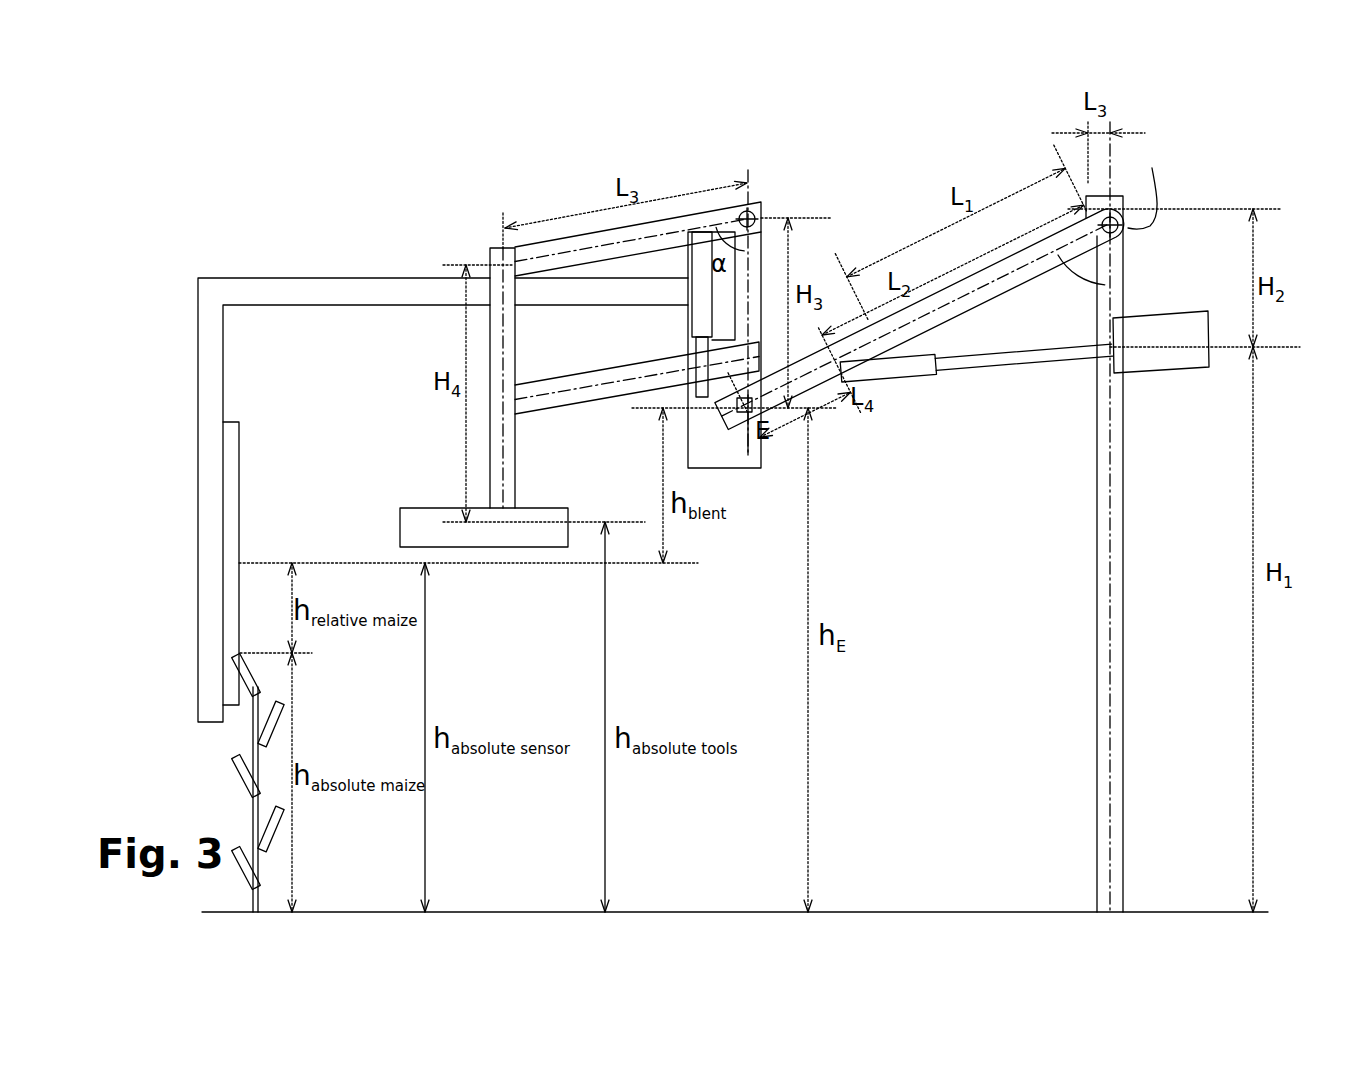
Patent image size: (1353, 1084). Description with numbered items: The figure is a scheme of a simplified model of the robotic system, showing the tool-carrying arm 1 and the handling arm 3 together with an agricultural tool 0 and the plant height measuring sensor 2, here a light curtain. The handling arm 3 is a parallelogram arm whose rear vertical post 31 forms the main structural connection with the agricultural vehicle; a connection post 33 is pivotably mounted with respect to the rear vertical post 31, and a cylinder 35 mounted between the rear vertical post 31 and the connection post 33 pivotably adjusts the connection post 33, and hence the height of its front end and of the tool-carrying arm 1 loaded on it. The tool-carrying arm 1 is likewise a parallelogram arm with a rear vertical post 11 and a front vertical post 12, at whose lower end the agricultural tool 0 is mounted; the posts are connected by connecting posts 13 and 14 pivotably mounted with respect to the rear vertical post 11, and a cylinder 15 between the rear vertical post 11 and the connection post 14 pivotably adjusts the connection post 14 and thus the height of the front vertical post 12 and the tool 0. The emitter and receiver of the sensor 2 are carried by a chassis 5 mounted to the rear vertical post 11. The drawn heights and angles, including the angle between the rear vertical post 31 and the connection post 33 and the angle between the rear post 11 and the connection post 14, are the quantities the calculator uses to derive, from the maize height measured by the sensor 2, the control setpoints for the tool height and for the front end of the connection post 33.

The tool-carrying arm 1 is at (695, 178).
The plant height measuring sensor 2 is at (230, 520).
The handling arm 3 is at (1010, 170).
The chassis 5 is at (330, 292).
The rear vertical post 11 is at (714, 308).
The front vertical post 12 is at (492, 435).
The connecting post 13 is at (578, 400).
The connection post 14 is at (570, 243).
The cylinder 15 is at (693, 293).
The agricultural tool 0 is at (530, 550).
The rear vertical post 31 is at (1115, 481).
The connection post 33 is at (963, 310).
The cylinder 35 is at (1040, 352).